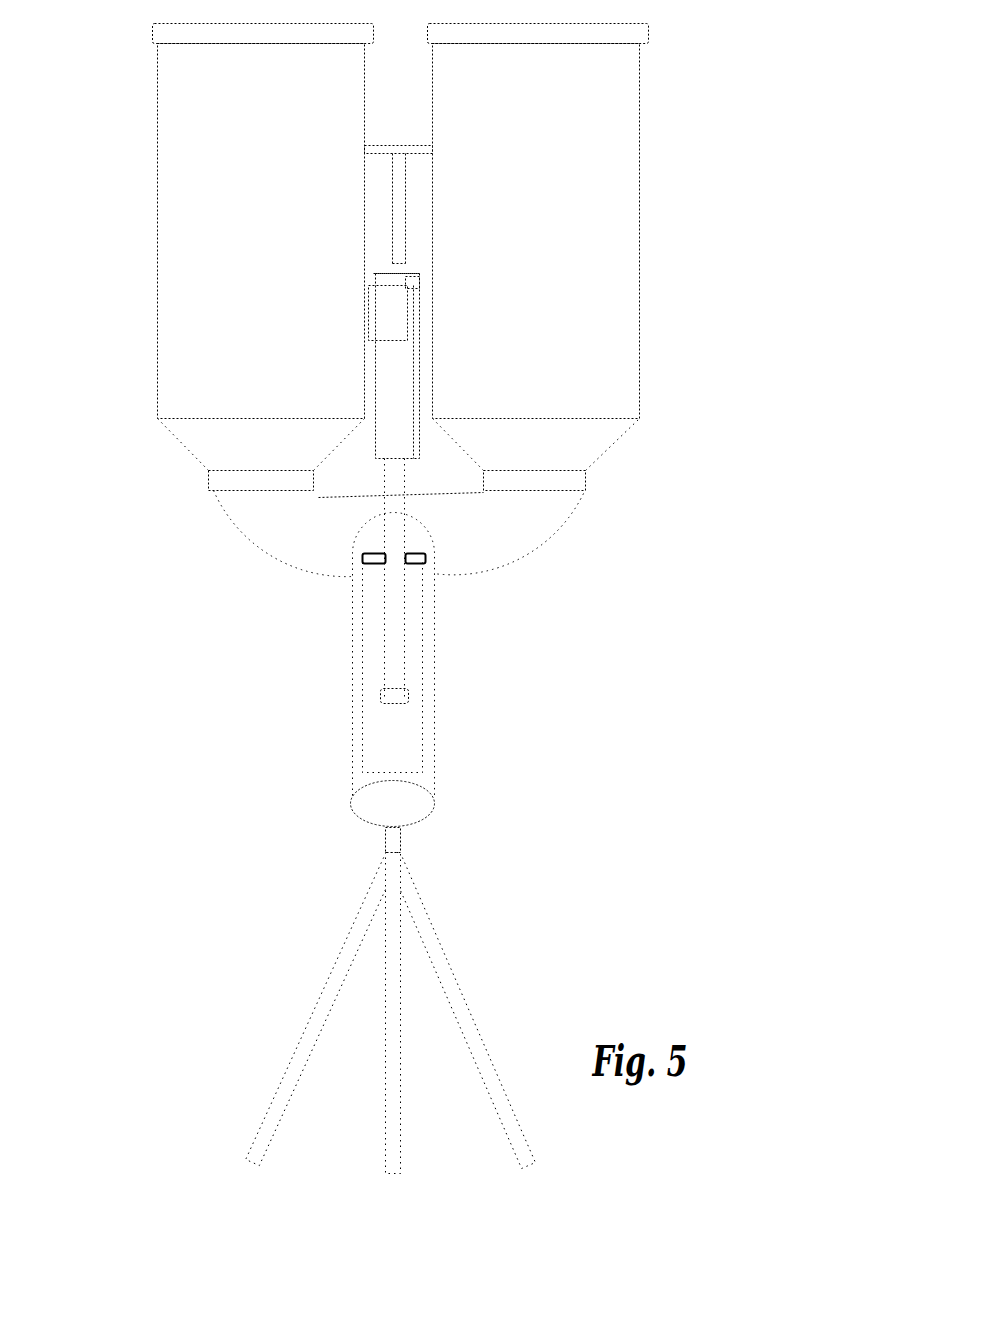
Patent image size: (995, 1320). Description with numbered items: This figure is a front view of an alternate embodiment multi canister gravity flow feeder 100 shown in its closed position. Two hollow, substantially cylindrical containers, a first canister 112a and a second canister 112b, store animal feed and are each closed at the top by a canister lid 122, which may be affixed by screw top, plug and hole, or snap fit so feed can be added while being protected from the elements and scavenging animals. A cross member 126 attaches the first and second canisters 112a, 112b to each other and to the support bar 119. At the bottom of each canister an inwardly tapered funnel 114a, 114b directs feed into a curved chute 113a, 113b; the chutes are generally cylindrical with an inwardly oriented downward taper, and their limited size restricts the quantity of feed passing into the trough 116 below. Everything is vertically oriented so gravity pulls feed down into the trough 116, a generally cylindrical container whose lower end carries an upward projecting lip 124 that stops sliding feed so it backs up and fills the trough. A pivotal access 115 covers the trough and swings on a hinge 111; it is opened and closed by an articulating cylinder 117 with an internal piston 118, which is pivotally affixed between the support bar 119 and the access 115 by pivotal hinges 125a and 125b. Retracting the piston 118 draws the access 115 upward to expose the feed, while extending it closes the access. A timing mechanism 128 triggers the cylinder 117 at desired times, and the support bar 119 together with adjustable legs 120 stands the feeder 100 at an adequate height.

The multi canister gravity flow feeder 100 is at (714, 247).
The hinge 111 is at (385, 557).
The first canister 112a is at (188, 66).
The second canister 112b is at (628, 143).
The curved chute 113a is at (250, 528).
The curved chute 113b is at (545, 523).
The funnel 114a is at (197, 447).
The funnel 114b is at (553, 437).
The pivotal access 115 is at (377, 733).
The trough 116 is at (358, 603).
The articulating cylinder 117 is at (390, 353).
The internal piston 118 is at (398, 600).
The support bar 119 is at (397, 265).
The legs 120 is at (463, 987).
The canister lid 122 is at (648, 38).
The upward projecting lip 124 is at (418, 805).
The pivotal hinge 125a is at (411, 280).
The pivotal hinge 125b is at (400, 700).
The cross member 126 is at (388, 147).
The timing mechanism 128 is at (385, 323).